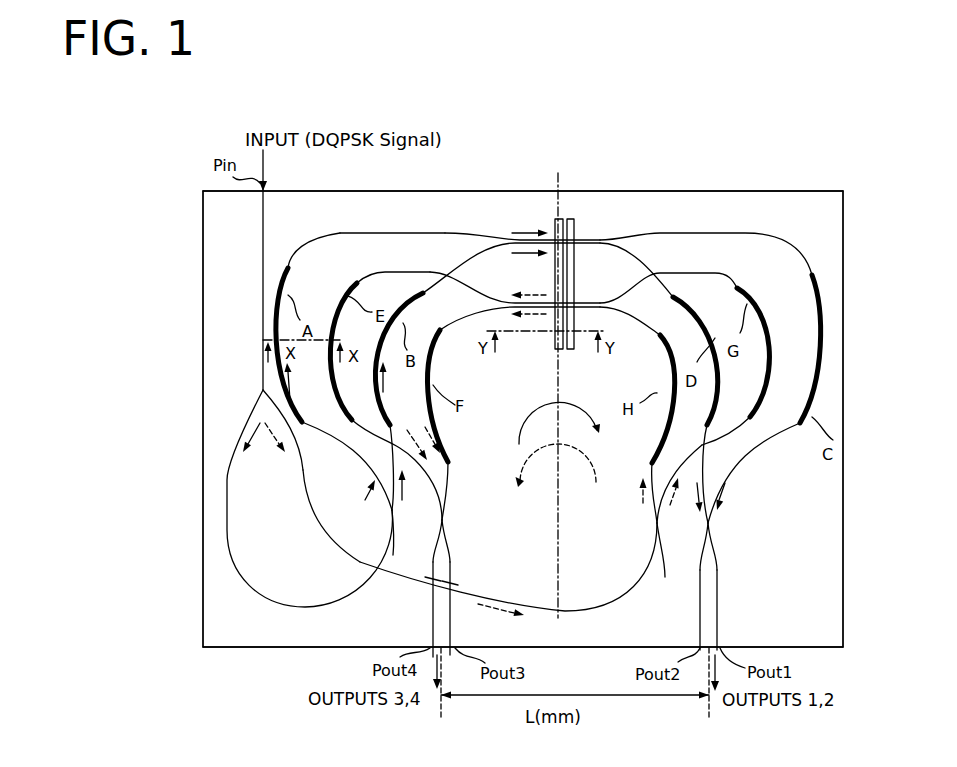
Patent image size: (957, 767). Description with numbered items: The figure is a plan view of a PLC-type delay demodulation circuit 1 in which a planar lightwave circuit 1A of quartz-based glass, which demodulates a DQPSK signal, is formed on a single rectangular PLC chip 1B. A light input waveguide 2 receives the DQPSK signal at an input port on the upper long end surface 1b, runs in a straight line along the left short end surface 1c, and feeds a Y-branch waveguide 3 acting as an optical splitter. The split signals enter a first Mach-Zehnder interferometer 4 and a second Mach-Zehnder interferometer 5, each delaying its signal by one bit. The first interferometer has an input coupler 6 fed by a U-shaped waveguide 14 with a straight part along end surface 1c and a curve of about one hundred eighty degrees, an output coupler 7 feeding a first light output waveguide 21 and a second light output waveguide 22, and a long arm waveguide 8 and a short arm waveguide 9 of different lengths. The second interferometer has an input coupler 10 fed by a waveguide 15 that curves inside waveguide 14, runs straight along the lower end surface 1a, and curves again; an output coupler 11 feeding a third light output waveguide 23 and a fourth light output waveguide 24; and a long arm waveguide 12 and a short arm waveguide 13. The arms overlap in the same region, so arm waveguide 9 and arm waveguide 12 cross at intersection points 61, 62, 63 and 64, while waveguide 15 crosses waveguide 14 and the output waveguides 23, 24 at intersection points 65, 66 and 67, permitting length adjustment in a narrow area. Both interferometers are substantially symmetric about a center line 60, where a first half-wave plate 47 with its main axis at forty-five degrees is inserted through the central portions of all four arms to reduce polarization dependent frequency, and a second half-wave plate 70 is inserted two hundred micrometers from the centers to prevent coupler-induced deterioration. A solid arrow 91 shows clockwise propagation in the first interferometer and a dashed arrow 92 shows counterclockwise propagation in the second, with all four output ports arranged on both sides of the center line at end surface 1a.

The PLC-type delay demodulation circuit 1 is at (508, 190).
The planar lightwave circuit 1A is at (463, 231).
The PLC chip 1B is at (845, 313).
The end surface 1a is at (265, 647).
The end surface 1b is at (347, 188).
The end surface 1c is at (203, 410).
The light input waveguide 2 is at (262, 284).
The Y-branch waveguide 3 is at (262, 392).
The first Mach-Zehnder interferometer 4 is at (305, 248).
The second Mach-Zehnder interferometer 5 is at (656, 353).
The input coupler 6 is at (388, 520).
The output coupler 7 is at (712, 527).
The long arm waveguide 8 is at (387, 232).
The short arm waveguide 9 is at (462, 263).
The input coupler 10 is at (655, 525).
The output coupler 11 is at (443, 520).
The long arm waveguide 12 is at (383, 273).
The short arm waveguide 13 is at (447, 473).
The waveguide 14 is at (272, 606).
The waveguide 15 is at (525, 600).
The first light output waveguide 21 is at (718, 578).
The second light output waveguide 22 is at (700, 590).
The third light output waveguide 23 is at (453, 613).
The fourth light output waveguide 24 is at (430, 617).
The first half-wave plate 47 is at (553, 350).
The second half-wave plate 70 is at (572, 350).
The center line 60 is at (557, 527).
The intersection point 61 is at (438, 277).
The intersection point 62 is at (366, 454).
The intersection point 63 is at (653, 281).
The intersection point 64 is at (705, 447).
The intersection point 65 is at (365, 568).
The intersection point 66 is at (453, 585).
The intersection point 67 is at (430, 583).
The solid arrow 91 is at (548, 408).
The dashed arrow 92 is at (575, 458).